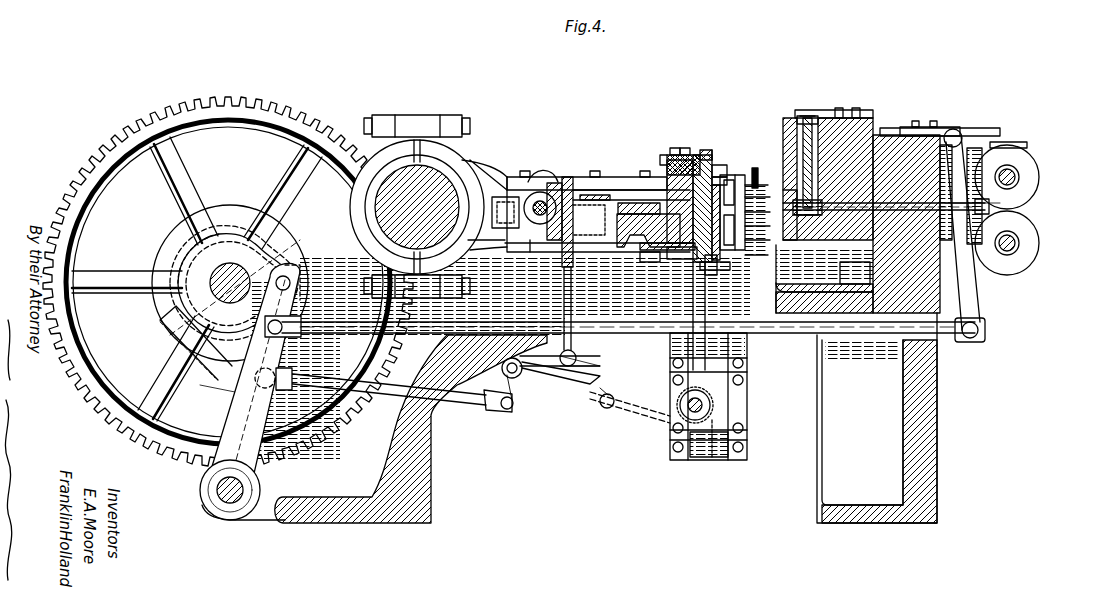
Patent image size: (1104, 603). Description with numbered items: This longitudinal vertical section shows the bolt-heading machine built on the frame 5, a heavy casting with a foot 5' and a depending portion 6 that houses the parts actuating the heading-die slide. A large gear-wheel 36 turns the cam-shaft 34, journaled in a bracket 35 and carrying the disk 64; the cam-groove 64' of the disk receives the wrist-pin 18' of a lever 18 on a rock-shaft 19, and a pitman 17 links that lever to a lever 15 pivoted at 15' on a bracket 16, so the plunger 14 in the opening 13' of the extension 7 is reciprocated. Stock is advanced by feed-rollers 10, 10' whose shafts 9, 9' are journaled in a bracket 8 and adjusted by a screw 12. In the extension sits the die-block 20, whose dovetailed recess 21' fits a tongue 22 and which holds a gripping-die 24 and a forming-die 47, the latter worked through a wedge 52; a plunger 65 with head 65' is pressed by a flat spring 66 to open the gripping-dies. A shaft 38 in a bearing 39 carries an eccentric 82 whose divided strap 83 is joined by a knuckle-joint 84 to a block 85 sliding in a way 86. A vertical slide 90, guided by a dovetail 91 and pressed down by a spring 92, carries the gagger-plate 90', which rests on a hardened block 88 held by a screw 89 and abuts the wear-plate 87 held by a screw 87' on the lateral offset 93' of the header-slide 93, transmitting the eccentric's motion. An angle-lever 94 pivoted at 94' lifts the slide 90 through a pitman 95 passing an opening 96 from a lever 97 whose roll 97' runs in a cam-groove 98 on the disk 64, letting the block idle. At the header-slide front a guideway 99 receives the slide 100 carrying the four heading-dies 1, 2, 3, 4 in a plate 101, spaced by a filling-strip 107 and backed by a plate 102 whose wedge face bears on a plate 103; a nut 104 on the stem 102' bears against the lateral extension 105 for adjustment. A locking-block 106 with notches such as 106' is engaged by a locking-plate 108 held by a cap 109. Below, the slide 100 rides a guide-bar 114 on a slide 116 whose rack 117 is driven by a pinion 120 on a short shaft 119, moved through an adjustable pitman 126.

The gear-wheel 36 is at (60, 232).
The disk 64 is at (230, 283).
The cam-groove 64' is at (172, 257).
The cam-shaft 34 is at (235, 287).
The bracket 35 is at (175, 318).
The cam-groove 98 is at (207, 370).
The lever 18 is at (257, 391).
The rock-shaft 19 is at (244, 488).
The wrist-pin 18' is at (302, 263).
The antifriction-roll 97' is at (311, 299).
The pivoted lever 97 is at (628, 346).
The pitman 95 is at (395, 388).
The opening 96 is at (445, 403).
The foot 5' is at (411, 429).
The eccentric 82 is at (380, 207).
The divided strap 83 is at (432, 140).
The shaft 38 is at (476, 255).
The bearing 39 is at (480, 168).
The frame 5 is at (623, 246).
The way 86 is at (612, 177).
The block 85 is at (545, 192).
The knuckle-joint 84 is at (555, 185).
The spring 92 is at (548, 168).
The vertical slide 90 is at (583, 263).
The gagger-plate 90' is at (596, 175).
The wear-plate 87 is at (631, 176).
The stem 102' is at (643, 196).
The hardened block 88 is at (589, 220).
The screw 89 is at (622, 247).
The screw 87' is at (645, 276).
The dovetail guide 91 is at (538, 255).
The nut 104 is at (670, 252).
The header-slide 93 is at (676, 195).
The lateral offset 93' is at (676, 270).
The locking-block 106 is at (715, 133).
The notch 106' is at (736, 118).
The cap 109 is at (712, 150).
The lateral extension 105 is at (717, 165).
The locking-plate 108 is at (718, 177).
The plate 103 is at (718, 185).
The plate 101 is at (735, 175).
The forming-die 47 is at (755, 185).
The heading-die 1 is at (761, 180).
The heading-die 2 is at (761, 205).
The filling-strip 107 is at (769, 219).
The heading-die 3 is at (762, 233).
The heading-die 4 is at (762, 249).
The plate 102 is at (740, 270).
The guideway 99 is at (717, 272).
The vertically-reciprocatory slide 100 is at (706, 300).
The tongue 22 is at (862, 150).
The flat spring 66 is at (808, 112).
The plunger 65 is at (825, 149).
The head 65' is at (802, 90).
The gripping-die 24 is at (790, 195).
The extension 7 is at (915, 140).
The recess 21' is at (930, 113).
The die-block 20 is at (790, 250).
The opening 13' is at (902, 200).
The bracket 8 is at (975, 150).
The bracket 16 is at (952, 133).
The lever 15 is at (978, 232).
The pivot 15' is at (964, 126).
The pitman 17 is at (948, 338).
The screw 12 is at (1012, 142).
The feed-roller 10 is at (1024, 177).
The shaft 9 is at (1022, 163).
The feed-roller 10' is at (1024, 243).
The shaft 9' is at (1024, 258).
The plunger 14 is at (935, 230).
The wedge 52 is at (877, 418).
The depending portion 6 is at (745, 345).
The guide-bar 114 is at (720, 368).
The pinion 120 is at (678, 418).
The rack 117 is at (729, 440).
The slide 116 is at (712, 458).
The short shaft 119 is at (630, 408).
The angle-lever 94 is at (560, 374).
The pivot 94' is at (527, 387).
The adjustable pitman 126 is at (590, 412).